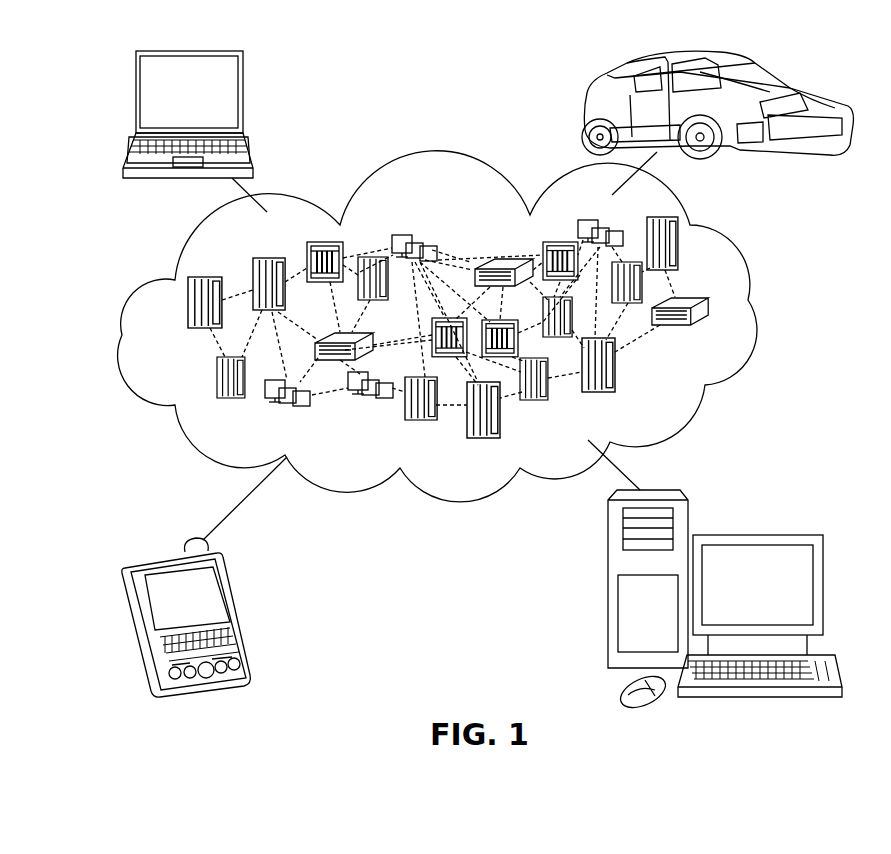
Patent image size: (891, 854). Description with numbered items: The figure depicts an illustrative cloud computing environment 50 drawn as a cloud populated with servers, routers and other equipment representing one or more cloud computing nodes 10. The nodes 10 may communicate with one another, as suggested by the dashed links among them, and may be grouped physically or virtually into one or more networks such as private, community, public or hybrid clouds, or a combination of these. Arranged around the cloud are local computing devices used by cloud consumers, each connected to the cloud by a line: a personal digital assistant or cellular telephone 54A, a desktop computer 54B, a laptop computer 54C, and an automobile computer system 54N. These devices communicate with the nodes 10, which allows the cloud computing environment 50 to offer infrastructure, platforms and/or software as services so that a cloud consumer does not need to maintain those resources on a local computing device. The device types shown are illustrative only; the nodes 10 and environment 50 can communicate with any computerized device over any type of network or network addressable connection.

The cloud computing nodes 10 is at (486, 382).
The cloud computing environment 50 is at (757, 308).
The personal digital assistant (PDA) or cellular telephone 54A is at (236, 611).
The desktop computer 54B is at (756, 535).
The laptop computer 54C is at (243, 98).
The automobile computer system 54N is at (582, 111).